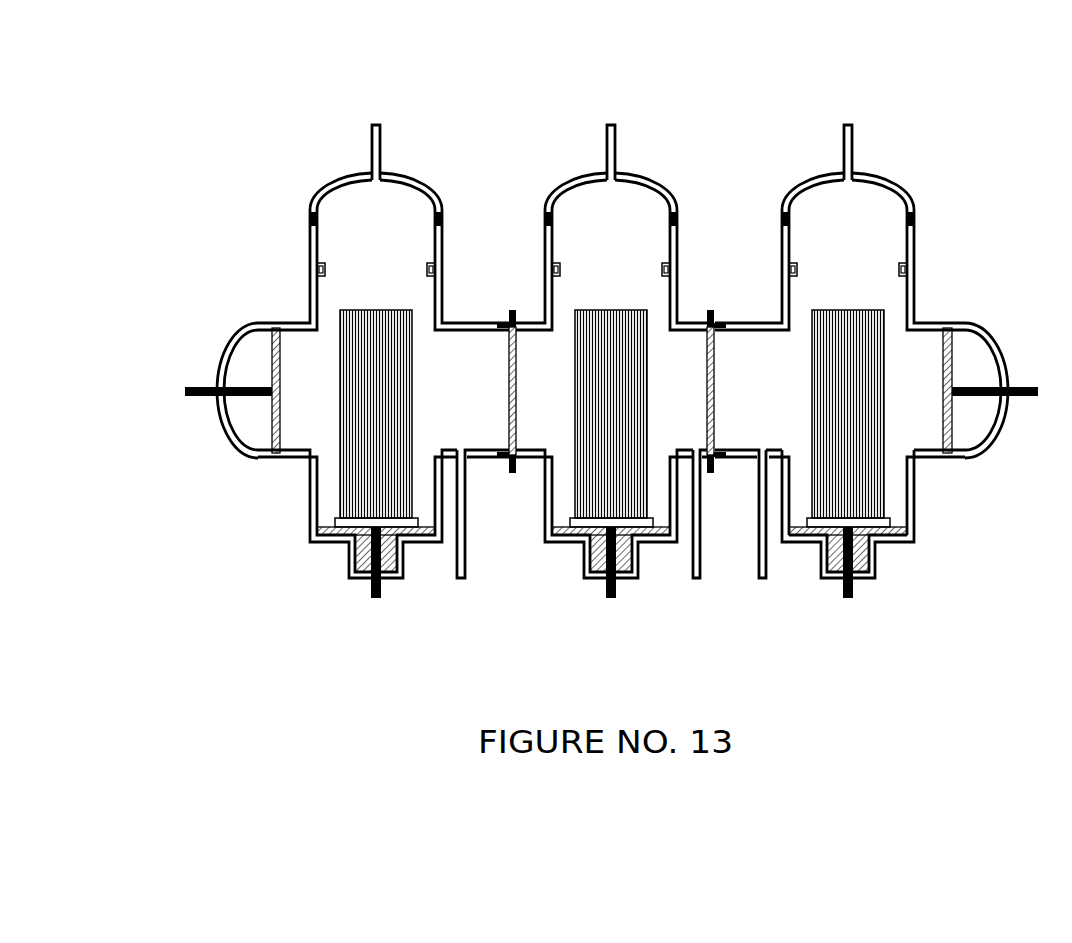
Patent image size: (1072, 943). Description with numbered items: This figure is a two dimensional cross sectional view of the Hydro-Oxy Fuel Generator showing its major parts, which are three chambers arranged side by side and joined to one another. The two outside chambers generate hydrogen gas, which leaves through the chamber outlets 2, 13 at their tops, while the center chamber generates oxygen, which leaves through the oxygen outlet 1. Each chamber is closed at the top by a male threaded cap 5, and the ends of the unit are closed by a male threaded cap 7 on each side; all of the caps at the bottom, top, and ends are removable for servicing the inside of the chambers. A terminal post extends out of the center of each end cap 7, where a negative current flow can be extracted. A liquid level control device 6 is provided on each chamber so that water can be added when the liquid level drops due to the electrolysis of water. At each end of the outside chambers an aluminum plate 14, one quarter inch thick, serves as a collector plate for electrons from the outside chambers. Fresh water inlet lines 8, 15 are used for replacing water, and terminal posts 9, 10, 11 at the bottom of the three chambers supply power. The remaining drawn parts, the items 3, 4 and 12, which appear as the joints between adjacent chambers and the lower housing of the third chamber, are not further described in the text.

The oxygen outlet 1 is at (612, 125).
The chamber outlet 2 is at (377, 122).
The flange between second and third vessels 3 is at (716, 324).
The flange between first and second vessels 4 is at (506, 348).
The male threaded cap 5 is at (317, 185).
The liquid level control device 6 is at (313, 268).
The male threaded cap 7 is at (220, 437).
The fresh water inlet line 8 is at (461, 580).
The terminal post 9 is at (375, 602).
The terminal post 10 is at (612, 602).
The terminal post 11 is at (848, 602).
The bottom shell of third vessel 12 is at (890, 545).
The chamber outlet 13 is at (852, 123).
The aluminum plate 14 is at (270, 368).
The fresh water inlet line 15 is at (700, 580).